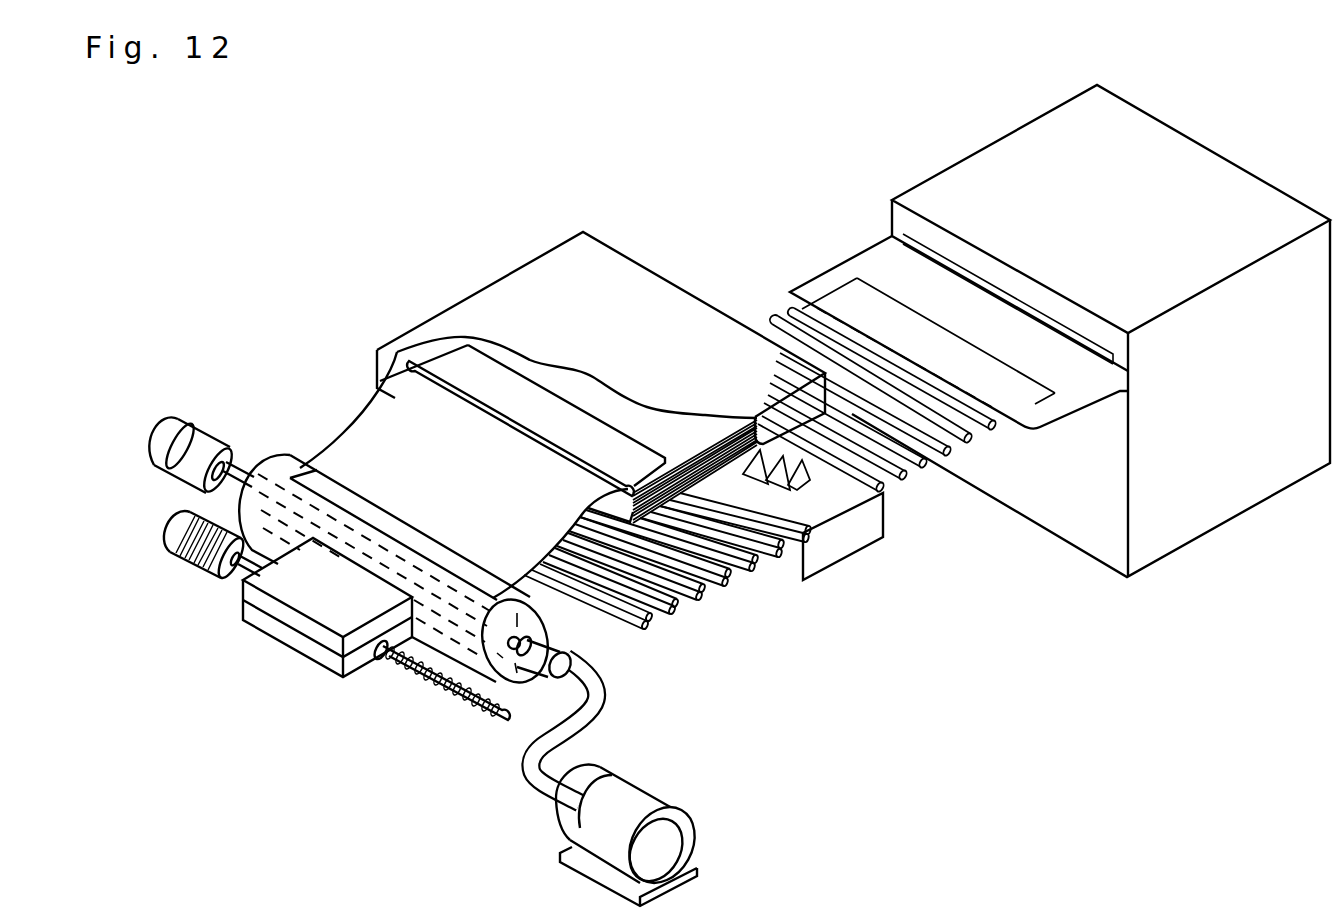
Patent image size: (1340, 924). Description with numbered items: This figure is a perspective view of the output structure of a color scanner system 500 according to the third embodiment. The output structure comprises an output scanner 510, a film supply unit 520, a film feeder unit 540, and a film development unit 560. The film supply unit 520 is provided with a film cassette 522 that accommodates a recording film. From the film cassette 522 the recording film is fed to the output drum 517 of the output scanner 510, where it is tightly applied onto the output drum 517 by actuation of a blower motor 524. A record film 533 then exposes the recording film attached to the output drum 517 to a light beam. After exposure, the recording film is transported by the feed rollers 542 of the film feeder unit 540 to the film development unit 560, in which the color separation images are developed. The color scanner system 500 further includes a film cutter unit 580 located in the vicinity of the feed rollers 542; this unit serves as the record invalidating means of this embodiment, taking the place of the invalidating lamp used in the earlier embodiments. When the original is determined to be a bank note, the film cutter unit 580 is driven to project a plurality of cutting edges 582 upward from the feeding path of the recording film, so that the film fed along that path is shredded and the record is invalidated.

The color scanner system 500 is at (906, 648).
The output scanner 510 is at (153, 388).
The output drum 517 is at (288, 456).
The film supply unit 520 is at (536, 222).
The film cassette 522 is at (612, 268).
The blower motor 524 is at (643, 797).
The record film 533 is at (315, 606).
The film feeder unit 540 is at (583, 657).
The feed rollers 542 is at (688, 592).
The film development unit 560 is at (1003, 153).
The film cutter unit 580 is at (876, 521).
The cutting edges 582 is at (806, 482).